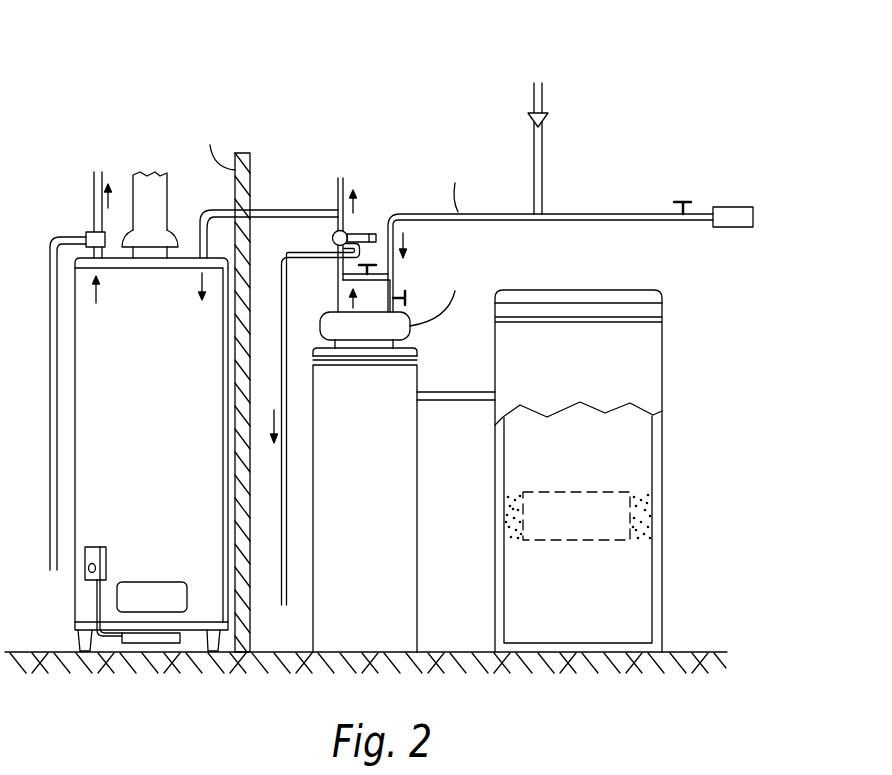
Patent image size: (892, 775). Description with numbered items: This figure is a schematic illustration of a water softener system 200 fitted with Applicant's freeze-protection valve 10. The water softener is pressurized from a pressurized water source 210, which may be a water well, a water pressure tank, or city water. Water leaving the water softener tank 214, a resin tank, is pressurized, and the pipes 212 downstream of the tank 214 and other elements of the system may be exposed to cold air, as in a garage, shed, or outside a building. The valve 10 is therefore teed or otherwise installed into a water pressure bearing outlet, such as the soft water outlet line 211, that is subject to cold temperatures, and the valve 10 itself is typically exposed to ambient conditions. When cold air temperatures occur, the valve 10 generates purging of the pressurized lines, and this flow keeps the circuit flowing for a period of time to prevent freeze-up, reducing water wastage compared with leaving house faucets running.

The water softener system 200 is at (387, 338).
The valve 10 is at (362, 230).
The pressurized water source 210 is at (737, 207).
The soft water outlet line 211 is at (337, 302).
The pipes 212 is at (332, 249).
The water softener tank 214 is at (405, 595).